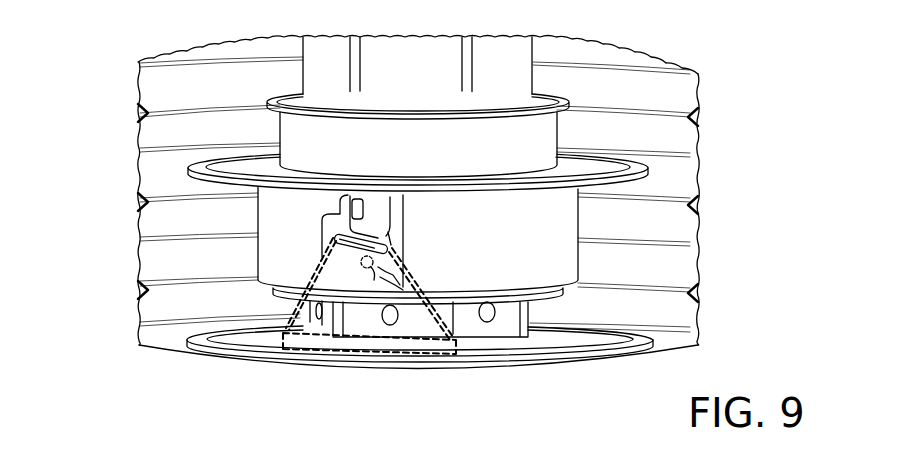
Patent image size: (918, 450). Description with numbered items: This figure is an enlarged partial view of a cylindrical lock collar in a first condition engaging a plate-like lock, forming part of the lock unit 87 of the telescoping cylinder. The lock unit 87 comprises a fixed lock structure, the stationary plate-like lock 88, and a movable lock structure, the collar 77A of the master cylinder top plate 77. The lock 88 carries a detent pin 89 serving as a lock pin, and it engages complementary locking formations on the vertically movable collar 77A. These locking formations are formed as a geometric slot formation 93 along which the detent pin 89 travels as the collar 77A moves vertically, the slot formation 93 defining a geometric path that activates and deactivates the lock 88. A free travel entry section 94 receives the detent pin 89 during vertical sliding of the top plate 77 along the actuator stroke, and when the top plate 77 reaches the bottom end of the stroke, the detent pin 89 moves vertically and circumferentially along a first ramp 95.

The master cylinder top plate 77 is at (627, 158).
The collar 77A is at (552, 230).
The lock unit 87 is at (132, 353).
The plate-like lock 88 is at (340, 281).
The detent pin 89 is at (366, 272).
The geometric slot formation 93 is at (323, 255).
The free travel entry section 94 is at (355, 278).
The first ramp 95 is at (366, 266).